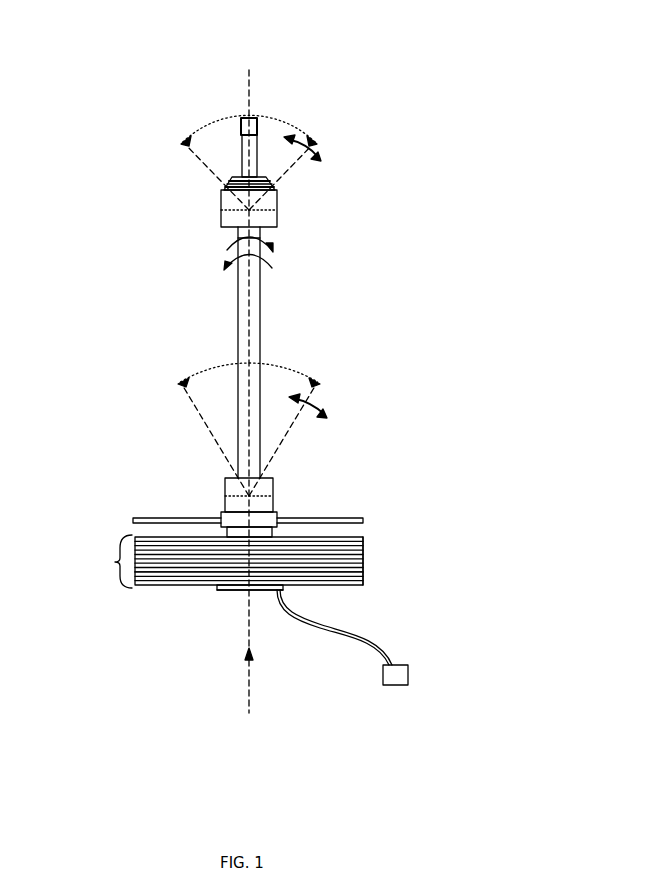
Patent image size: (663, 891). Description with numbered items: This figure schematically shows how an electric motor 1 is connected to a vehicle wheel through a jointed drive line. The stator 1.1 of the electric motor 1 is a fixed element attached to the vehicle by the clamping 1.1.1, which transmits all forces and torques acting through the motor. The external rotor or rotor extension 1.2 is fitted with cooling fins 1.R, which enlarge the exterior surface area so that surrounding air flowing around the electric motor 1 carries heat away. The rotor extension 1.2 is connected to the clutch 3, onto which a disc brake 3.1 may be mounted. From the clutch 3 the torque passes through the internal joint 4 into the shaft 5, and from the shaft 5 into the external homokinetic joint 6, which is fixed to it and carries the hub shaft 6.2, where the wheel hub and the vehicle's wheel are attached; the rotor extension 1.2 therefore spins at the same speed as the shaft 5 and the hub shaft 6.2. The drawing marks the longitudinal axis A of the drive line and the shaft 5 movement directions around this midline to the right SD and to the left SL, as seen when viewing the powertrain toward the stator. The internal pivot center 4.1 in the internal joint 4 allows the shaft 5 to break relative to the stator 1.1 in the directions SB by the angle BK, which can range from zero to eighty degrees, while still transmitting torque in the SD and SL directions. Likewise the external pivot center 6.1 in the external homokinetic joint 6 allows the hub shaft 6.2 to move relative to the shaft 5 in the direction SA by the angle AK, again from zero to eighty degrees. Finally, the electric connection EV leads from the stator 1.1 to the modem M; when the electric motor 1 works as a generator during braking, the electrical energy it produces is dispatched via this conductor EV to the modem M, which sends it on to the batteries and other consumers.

The electric motor 1 is at (115, 562).
The stator 1.1 is at (260, 590).
The clamping 1.1.1 is at (230, 590).
The rotor extension 1.2 is at (363, 570).
The cooling fins 1.R is at (353, 565).
The clutch 3 is at (222, 515).
The disc brake 3.1 is at (187, 520).
The internal joint 4 is at (268, 480).
The internal pivot center 4.1 is at (252, 493).
The shaft 5 is at (248, 352).
The external homokinetic joint 6 is at (230, 202).
The external pivot center 6.1 is at (252, 208).
The hub shaft 6.2 is at (227, 118).
The axis A is at (255, 391).
The angle of external pivot AK is at (273, 118).
The external break direction SA is at (333, 120).
The right movement direction SD is at (265, 240).
The left movement direction SL is at (228, 262).
The angle of internal pivot BK is at (298, 373).
The internal break direction SB is at (317, 403).
The electric connection EV is at (377, 645).
The modem M is at (408, 667).